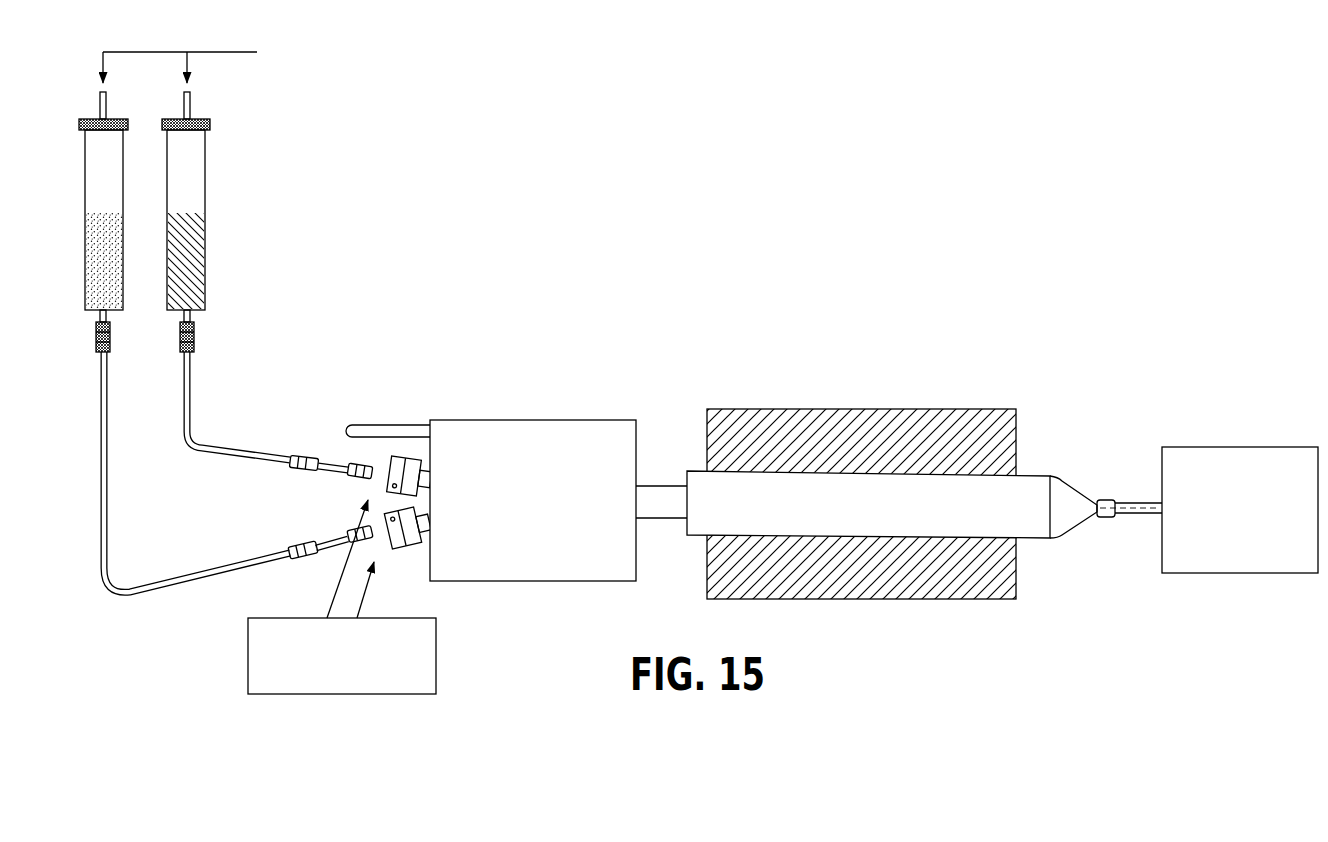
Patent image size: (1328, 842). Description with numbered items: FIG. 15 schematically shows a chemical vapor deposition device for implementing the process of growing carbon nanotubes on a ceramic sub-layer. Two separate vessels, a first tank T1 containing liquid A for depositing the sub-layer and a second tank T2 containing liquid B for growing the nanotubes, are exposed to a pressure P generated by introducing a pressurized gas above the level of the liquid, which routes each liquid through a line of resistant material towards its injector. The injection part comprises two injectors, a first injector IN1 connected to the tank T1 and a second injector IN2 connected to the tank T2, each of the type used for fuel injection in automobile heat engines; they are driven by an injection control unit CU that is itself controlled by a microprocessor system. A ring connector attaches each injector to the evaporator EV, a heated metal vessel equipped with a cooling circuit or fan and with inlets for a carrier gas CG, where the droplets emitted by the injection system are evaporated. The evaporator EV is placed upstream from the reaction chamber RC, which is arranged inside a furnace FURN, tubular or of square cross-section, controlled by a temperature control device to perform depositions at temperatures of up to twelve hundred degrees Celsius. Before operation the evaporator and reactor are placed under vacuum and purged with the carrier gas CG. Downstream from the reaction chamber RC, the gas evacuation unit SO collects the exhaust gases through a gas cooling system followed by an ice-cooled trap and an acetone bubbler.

The pressure P is at (188, 62).
The tank T1 is at (127, 223).
The second tank T2 is at (207, 250).
The carrier gas CG is at (338, 430).
The injector IN1 is at (360, 531).
The second injector IN2 is at (362, 473).
The evaporator EV is at (596, 420).
The furnace FURN is at (967, 409).
The reaction chamber RC is at (1028, 500).
The evacuation system SO is at (1293, 447).
The injection control unit CU is at (437, 638).